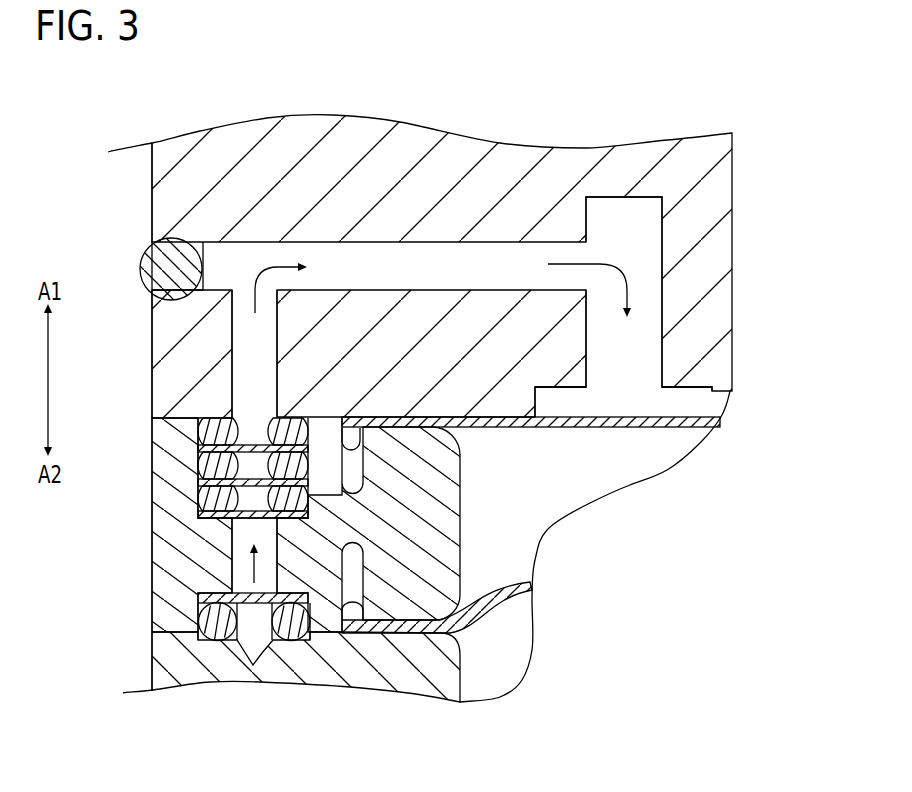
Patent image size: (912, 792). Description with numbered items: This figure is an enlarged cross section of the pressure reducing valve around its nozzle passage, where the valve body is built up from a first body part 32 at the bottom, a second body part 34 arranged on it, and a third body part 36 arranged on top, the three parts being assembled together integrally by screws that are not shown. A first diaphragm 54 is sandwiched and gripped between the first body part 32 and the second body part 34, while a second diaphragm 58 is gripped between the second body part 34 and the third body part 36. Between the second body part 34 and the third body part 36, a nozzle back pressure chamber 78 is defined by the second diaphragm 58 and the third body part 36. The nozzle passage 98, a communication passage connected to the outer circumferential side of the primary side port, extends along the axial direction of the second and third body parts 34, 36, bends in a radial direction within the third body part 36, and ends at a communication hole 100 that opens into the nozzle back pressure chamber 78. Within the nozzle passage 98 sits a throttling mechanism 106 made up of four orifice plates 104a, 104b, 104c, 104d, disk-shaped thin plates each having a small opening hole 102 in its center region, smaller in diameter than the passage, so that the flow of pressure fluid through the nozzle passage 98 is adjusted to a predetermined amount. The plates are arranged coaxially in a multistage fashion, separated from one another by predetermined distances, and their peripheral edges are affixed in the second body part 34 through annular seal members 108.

The third body part 36 is at (739, 245).
The nozzle passage 98 is at (252, 347).
The communication hole 100 is at (635, 358).
The nozzle back pressure chamber 78 is at (682, 397).
The second diaphragm 58 is at (579, 418).
The second body part 34 is at (466, 526).
The first diaphragm 54 is at (497, 596).
The first body part 32 is at (348, 697).
The throttling mechanism 106 is at (240, 416).
The opening hole 102 is at (258, 432).
The orifice plate 104a is at (217, 593).
The orifice plate 104b is at (200, 510).
The orifice plate 104c is at (200, 478).
The orifice plate 104d is at (200, 444).
The annular seal member 108 is at (365, 528).